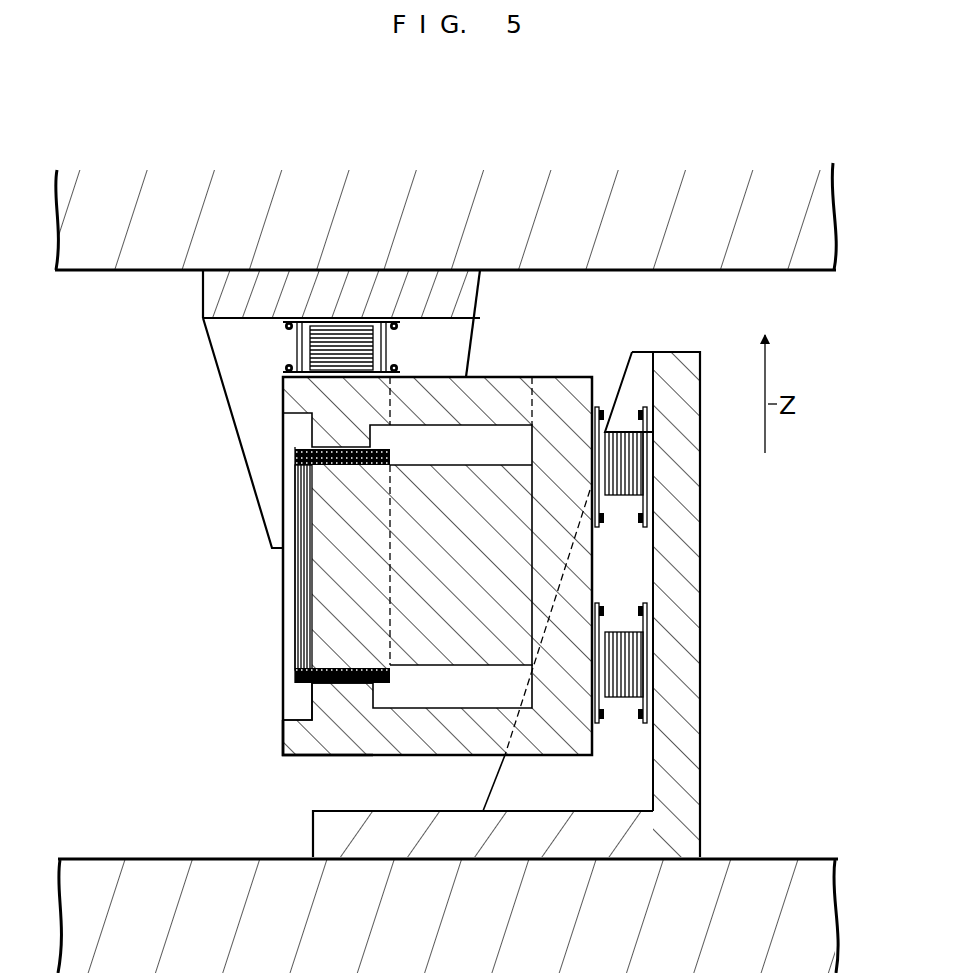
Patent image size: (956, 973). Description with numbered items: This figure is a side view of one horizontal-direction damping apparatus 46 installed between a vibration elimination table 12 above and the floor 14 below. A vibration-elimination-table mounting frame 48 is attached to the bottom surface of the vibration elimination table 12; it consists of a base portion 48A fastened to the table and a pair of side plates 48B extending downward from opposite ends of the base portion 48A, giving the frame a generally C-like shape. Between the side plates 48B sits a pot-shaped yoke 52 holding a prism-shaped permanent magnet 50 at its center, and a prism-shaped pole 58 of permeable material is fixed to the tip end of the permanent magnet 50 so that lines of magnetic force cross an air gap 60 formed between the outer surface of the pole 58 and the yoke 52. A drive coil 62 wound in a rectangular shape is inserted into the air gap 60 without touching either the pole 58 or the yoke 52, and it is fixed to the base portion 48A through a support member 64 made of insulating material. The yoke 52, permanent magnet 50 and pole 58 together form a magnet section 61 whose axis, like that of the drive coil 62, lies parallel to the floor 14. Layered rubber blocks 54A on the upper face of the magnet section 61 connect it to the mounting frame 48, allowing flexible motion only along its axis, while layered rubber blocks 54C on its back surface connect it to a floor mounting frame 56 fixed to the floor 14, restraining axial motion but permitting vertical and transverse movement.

The vibration elimination table 12 is at (79, 271).
The floor 14 is at (94, 859).
The horizontal-direction damping apparatus 46 is at (147, 555).
The vibration-elimination-table mounting frame 48 is at (342, 409).
The base portion 48A is at (463, 298).
The side plates 48B is at (457, 345).
The permanent magnet 50 is at (433, 668).
The yoke 52 is at (320, 757).
The layered rubber blocks 54A is at (274, 369).
The layered rubber blocks 54C is at (618, 498).
The floor mounting frame 56 is at (703, 612).
The pole 58 is at (328, 614).
The air gap 60 is at (302, 690).
The magnet section 61 is at (280, 736).
The drive coil 62 is at (312, 678).
The support member 64 is at (296, 345).